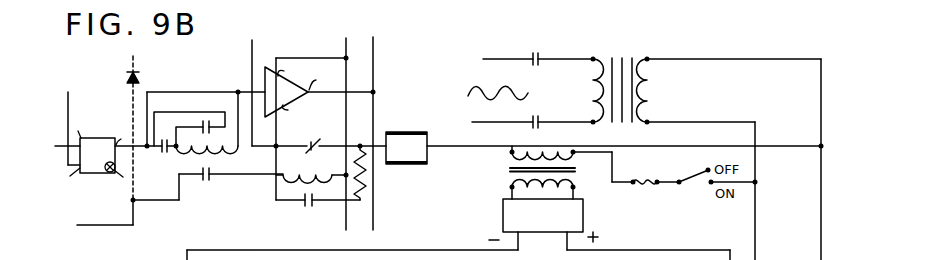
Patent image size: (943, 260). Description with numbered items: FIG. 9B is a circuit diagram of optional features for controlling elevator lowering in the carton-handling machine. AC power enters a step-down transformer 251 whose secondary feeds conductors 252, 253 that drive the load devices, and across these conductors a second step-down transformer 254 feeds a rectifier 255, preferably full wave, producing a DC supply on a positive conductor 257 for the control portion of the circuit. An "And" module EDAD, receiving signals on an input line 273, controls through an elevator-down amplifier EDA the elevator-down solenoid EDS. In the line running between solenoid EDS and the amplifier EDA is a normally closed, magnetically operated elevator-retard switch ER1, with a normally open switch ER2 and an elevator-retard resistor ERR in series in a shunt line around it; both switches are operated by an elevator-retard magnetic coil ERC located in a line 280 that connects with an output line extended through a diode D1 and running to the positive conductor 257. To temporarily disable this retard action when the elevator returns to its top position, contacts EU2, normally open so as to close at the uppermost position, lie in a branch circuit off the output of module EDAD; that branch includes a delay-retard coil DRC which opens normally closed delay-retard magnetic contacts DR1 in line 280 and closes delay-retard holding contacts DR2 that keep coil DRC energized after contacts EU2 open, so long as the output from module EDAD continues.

The step-down transformer 251 is at (626, 55).
The conductor 252 is at (372, 38).
The conductor 253 is at (821, 172).
The step-down transformer 254 is at (583, 179).
The rectifier 255 is at (517, 219).
The positive conductor 257 is at (345, 56).
The input line 273 is at (252, 55).
The line 280 is at (265, 176).
The diode D1 is at (128, 80).
The And module EDAD is at (81, 138).
The contacts EU2 is at (172, 150).
The delay-retard magnetic contacts DR1 is at (200, 182).
The delay-retard holding contacts DR2 is at (212, 120).
The delay-retard coil DRC is at (230, 154).
The elevator-down amplifier EDA is at (289, 91).
The elevator-retard switch ER1 is at (318, 139).
The elevator-retard magnetic coil ERC is at (312, 176).
The switch ER2 is at (302, 205).
The elevator-retard resistor ERR is at (367, 178).
The elevator-down solenoid EDS is at (406, 148).